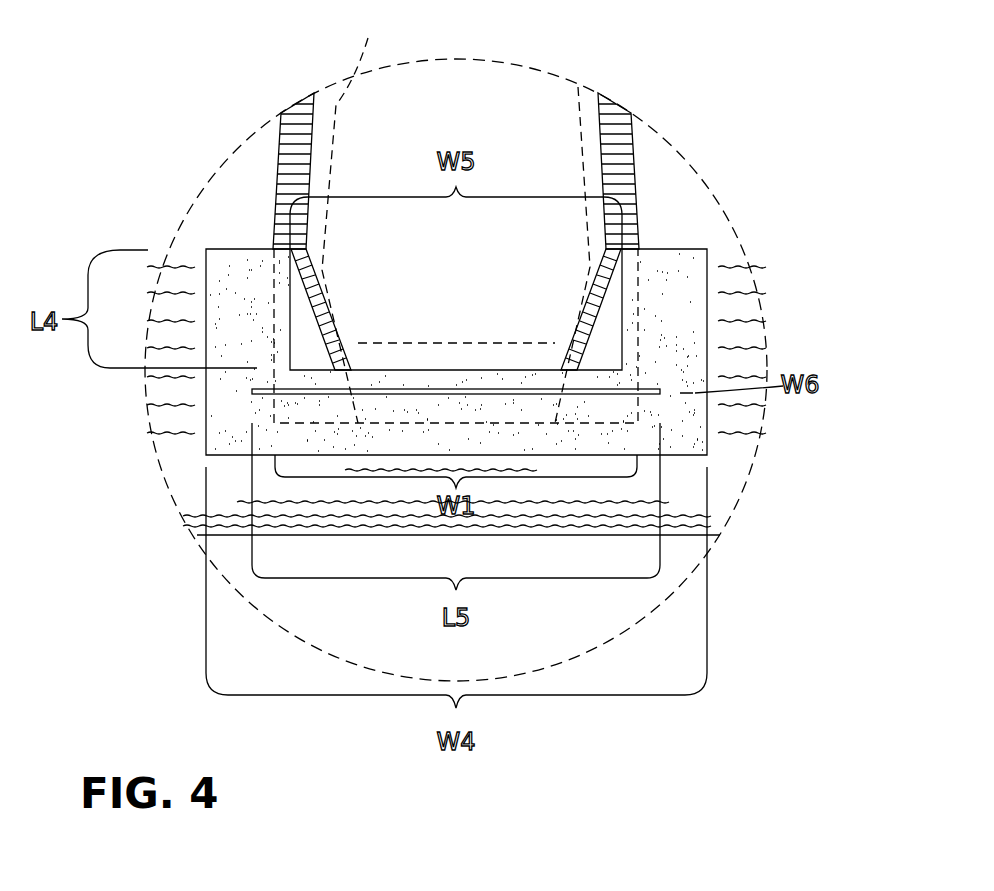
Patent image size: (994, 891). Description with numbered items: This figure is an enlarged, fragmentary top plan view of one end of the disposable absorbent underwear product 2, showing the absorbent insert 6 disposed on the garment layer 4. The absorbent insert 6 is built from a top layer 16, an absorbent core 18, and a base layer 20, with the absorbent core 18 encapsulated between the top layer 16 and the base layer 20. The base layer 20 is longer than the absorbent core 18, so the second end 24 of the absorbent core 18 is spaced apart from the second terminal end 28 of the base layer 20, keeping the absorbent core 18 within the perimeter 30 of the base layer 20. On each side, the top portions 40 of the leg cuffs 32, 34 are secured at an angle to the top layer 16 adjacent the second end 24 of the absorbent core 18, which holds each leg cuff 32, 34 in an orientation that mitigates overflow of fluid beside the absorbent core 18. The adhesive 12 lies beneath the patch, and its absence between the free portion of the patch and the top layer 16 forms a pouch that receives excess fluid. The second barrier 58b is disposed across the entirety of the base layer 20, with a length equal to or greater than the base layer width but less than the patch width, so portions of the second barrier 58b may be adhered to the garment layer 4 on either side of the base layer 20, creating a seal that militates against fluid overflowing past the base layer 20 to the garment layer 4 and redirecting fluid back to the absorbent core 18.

The disposable absorbent underwear product 2 is at (672, 543).
The garment layer 4 is at (745, 240).
The absorbent insert 6 is at (648, 180).
The adhesive 12 is at (237, 430).
The top layer 16 is at (527, 97).
The absorbent core 18 is at (456, 216).
The base layer 20 is at (648, 286).
The second end 24 is at (396, 330).
The second terminal end 28 is at (317, 438).
The perimeter 30 is at (637, 320).
The leg cuff 32 is at (298, 128).
The leg cuff 34 is at (613, 113).
The top portion 40 is at (313, 320).
The second barrier 58b is at (287, 387).